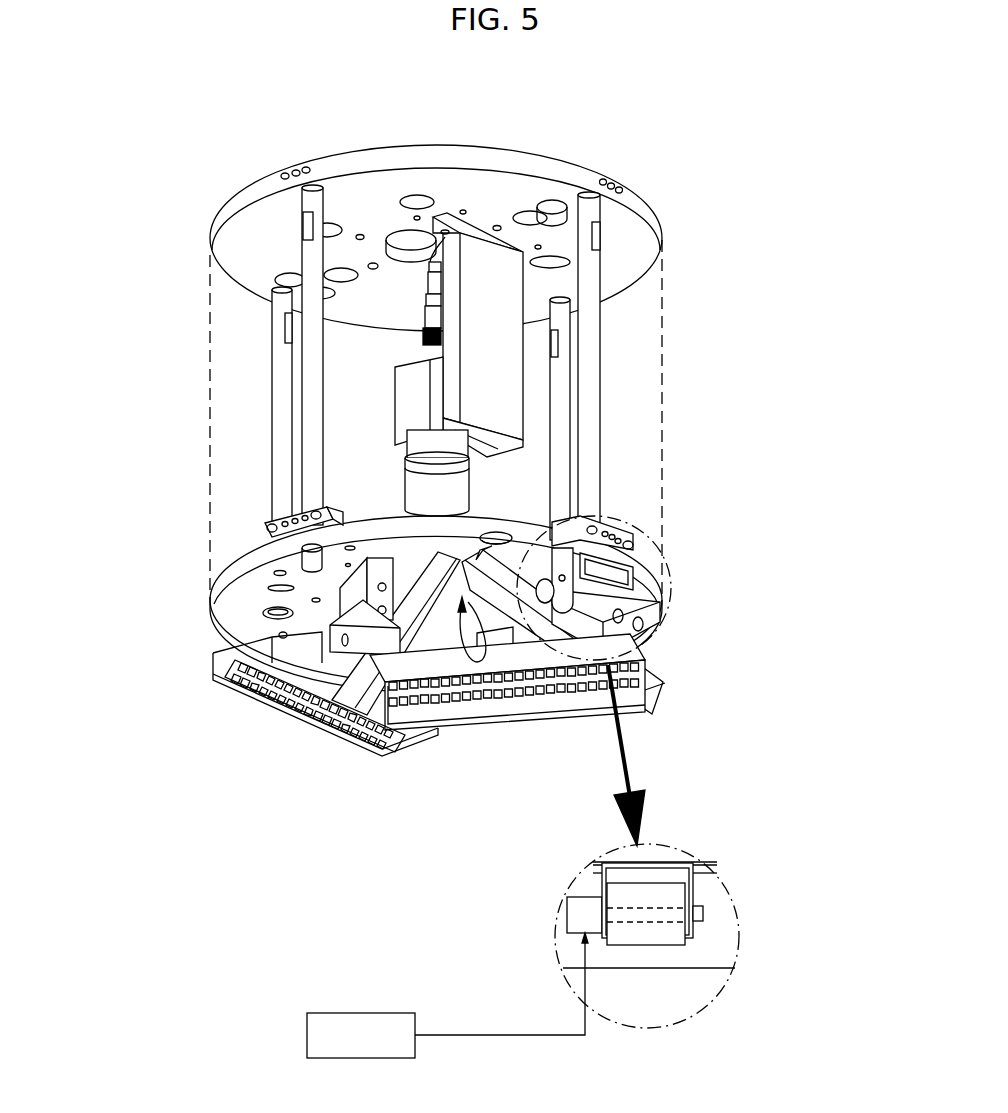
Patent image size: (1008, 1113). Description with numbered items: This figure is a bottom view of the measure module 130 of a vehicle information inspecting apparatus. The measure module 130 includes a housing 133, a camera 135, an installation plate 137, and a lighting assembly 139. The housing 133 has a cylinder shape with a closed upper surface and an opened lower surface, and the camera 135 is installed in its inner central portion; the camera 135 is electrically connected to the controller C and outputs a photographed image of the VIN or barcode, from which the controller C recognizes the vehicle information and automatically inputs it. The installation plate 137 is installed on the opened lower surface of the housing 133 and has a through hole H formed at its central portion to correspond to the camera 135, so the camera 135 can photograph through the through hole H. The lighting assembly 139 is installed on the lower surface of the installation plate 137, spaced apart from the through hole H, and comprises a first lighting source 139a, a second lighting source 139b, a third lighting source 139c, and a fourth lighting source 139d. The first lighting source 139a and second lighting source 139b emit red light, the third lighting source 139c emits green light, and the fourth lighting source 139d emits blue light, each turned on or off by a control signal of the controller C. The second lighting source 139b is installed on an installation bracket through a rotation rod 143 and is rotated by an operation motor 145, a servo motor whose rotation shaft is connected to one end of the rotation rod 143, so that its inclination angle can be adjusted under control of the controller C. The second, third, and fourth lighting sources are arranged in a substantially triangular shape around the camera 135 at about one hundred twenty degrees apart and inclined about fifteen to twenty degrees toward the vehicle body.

The measure module 130 is at (200, 409).
The housing 133 is at (207, 340).
The camera 135 is at (417, 487).
The installation plate 137 is at (247, 598).
The lighting assembly 139 is at (449, 770).
The first lighting source 139a is at (283, 700).
The second lighting source 139b is at (650, 690).
The third lighting source 139c is at (340, 740).
The fourth lighting source 139d is at (563, 702).
The rotation rod 143 is at (707, 913).
The operation motor 145 is at (536, 693).
The through hole H is at (543, 537).
The controller C is at (360, 1013).